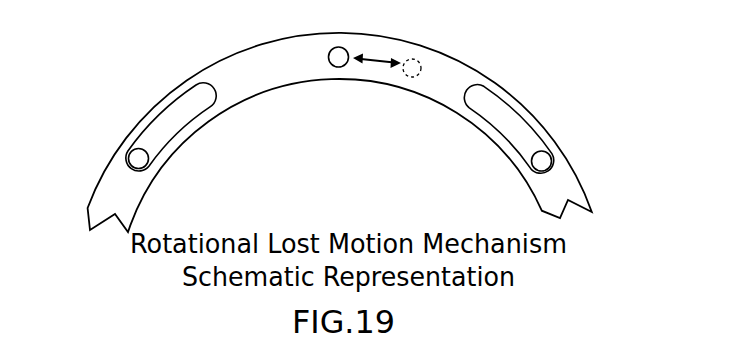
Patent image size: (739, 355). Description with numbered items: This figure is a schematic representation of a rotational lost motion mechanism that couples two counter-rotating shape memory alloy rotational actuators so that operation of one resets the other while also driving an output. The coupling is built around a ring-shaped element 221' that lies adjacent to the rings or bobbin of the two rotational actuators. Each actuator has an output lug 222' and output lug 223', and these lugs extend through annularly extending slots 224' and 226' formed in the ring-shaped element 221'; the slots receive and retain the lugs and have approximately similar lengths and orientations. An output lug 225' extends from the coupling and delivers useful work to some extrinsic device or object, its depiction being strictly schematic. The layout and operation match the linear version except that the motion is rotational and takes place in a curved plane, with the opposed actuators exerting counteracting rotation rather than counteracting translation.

The ring-shaped element 221' is at (340, 132).
The output lug 222' is at (96, 142).
The output lug 223' is at (565, 109).
The annularly extending slot 224' is at (154, 104).
The output lug 225' is at (376, 105).
The annularly extending slot 226' is at (487, 147).